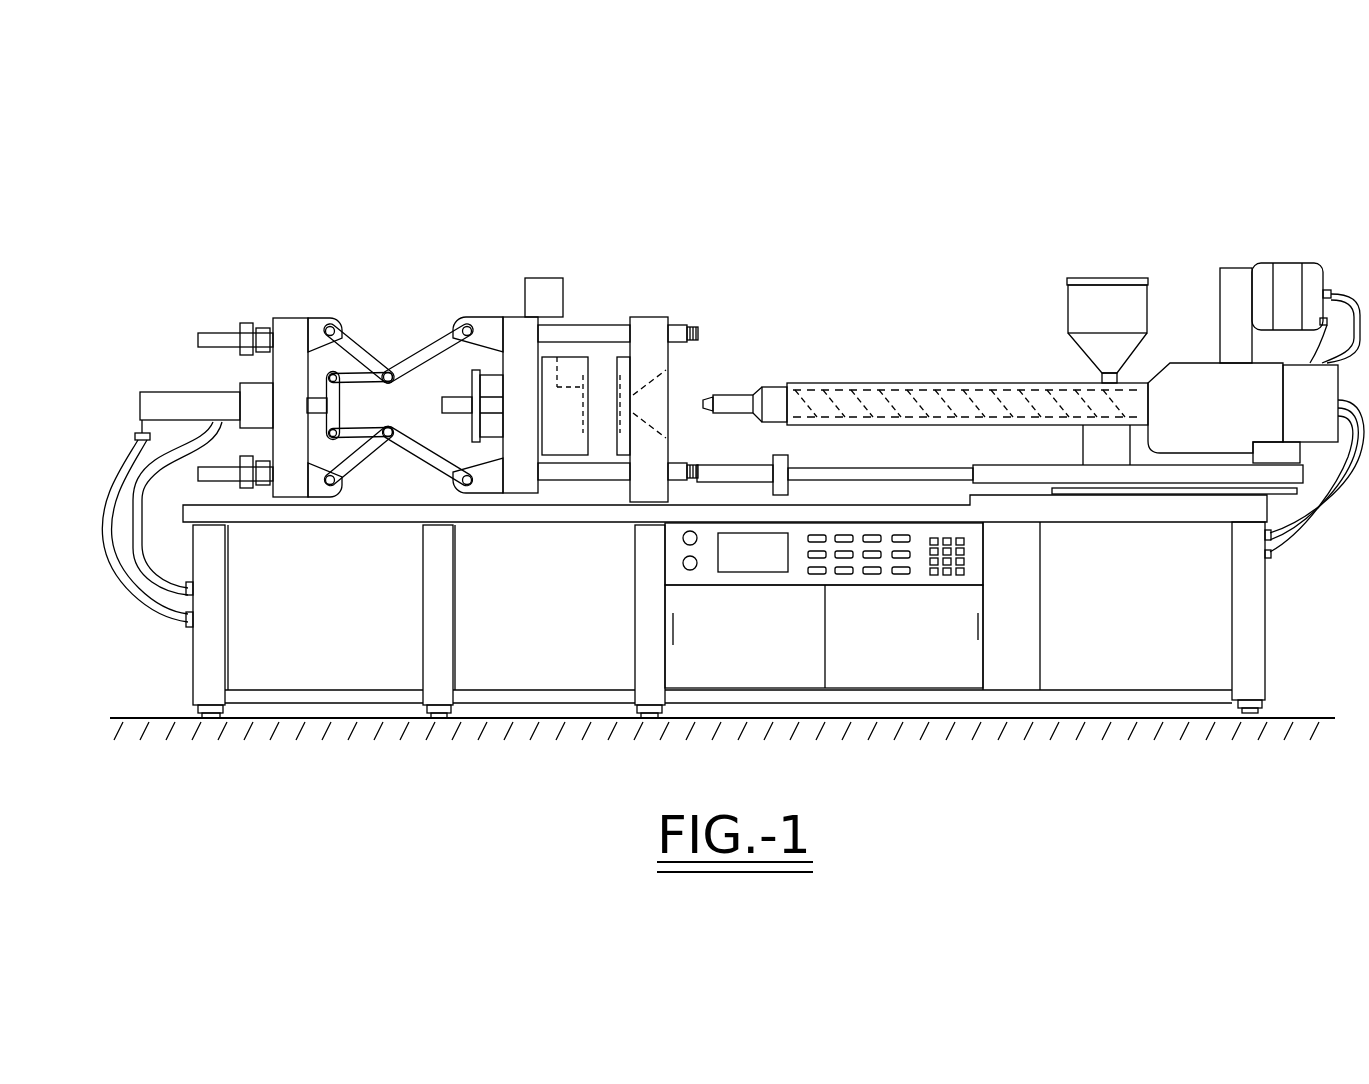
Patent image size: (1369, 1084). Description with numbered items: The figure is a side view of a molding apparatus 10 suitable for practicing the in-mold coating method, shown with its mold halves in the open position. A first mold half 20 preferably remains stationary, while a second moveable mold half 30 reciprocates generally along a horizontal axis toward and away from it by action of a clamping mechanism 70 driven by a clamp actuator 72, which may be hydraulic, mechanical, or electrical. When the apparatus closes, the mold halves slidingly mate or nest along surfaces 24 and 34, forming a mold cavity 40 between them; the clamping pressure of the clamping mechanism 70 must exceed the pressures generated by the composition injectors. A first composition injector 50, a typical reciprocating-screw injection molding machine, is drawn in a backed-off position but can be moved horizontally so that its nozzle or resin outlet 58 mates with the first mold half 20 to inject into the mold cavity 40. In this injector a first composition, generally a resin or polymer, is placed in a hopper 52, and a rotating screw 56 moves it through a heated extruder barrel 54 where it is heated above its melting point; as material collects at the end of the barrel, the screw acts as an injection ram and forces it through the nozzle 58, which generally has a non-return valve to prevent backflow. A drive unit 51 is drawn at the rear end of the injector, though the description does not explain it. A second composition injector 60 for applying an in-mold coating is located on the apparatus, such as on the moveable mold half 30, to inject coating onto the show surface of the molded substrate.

The molding apparatus 10 is at (577, 195).
The first mold half 20 is at (653, 317).
The mating surface 24 is at (602, 370).
The second moveable mold half 30 is at (512, 317).
The mating surface 34 is at (597, 372).
The mold cavity 40 is at (603, 450).
The first composition injector 50 is at (967, 352).
The drive motor 51 is at (1283, 262).
The hopper 52 is at (1067, 282).
The heated extruder barrel 54 is at (910, 383).
The rotating screw 56 is at (910, 410).
The nozzle 58 is at (697, 398).
The second composition injector 60 is at (538, 278).
The clamping mechanism 70 is at (302, 303).
The clamp actuator 72 is at (178, 397).